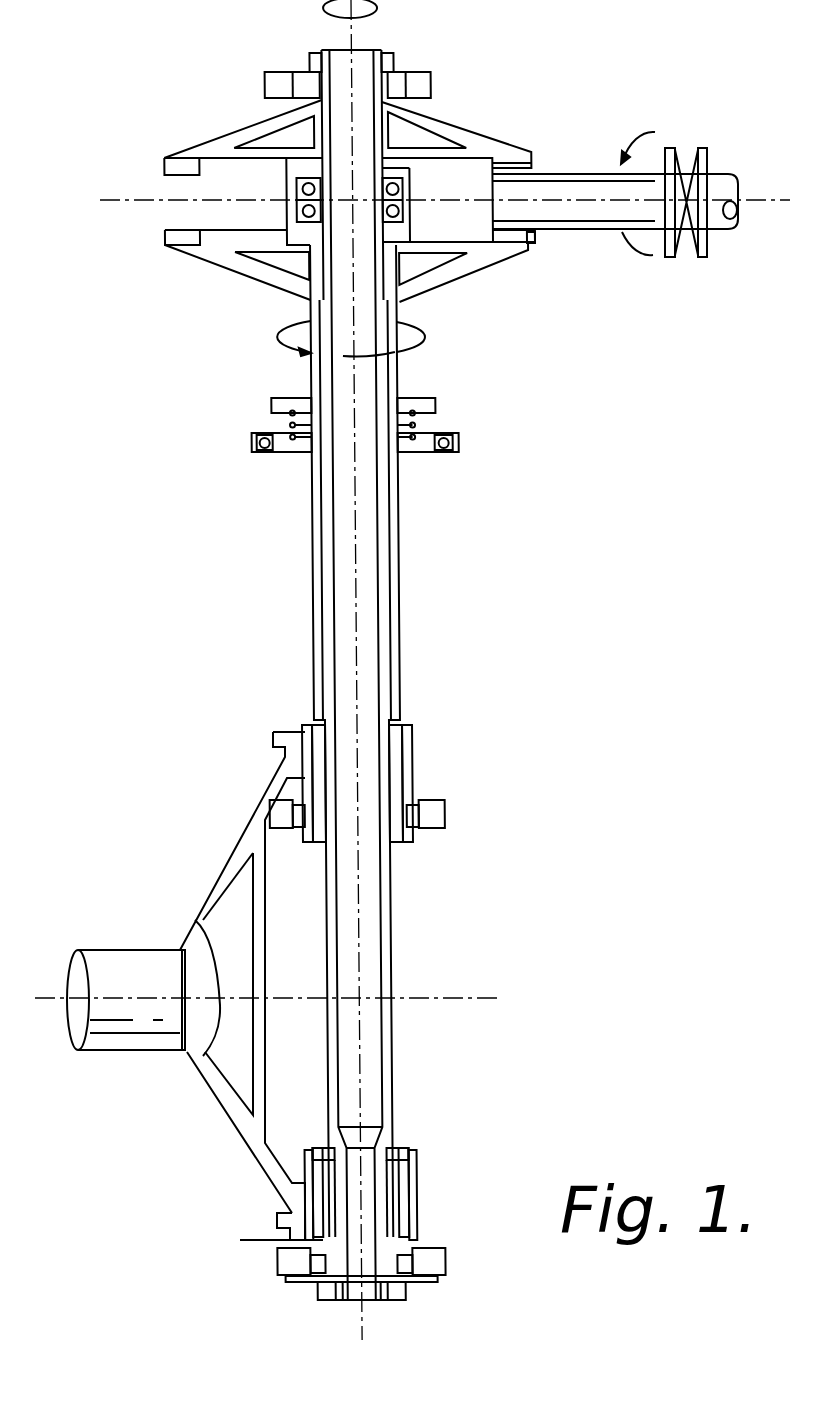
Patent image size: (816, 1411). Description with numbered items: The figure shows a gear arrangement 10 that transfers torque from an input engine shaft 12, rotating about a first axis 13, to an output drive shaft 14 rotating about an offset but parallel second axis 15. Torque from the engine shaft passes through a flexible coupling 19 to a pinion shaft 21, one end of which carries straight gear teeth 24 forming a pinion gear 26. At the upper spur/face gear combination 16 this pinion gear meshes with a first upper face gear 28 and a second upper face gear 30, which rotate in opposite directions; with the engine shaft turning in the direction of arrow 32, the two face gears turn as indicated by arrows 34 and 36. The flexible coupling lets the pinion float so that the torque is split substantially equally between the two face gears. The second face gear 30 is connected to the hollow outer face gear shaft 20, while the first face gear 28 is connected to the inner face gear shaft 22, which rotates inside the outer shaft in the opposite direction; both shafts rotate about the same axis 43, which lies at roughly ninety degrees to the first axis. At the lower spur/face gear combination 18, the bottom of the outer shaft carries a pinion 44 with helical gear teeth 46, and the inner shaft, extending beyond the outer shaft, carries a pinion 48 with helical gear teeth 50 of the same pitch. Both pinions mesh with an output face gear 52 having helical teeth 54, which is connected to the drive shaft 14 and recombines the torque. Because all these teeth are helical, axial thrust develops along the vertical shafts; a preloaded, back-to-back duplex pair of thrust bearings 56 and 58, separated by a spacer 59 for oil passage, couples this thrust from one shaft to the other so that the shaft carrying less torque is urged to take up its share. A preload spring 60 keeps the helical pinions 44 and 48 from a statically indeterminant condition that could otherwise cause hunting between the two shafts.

The gear arrangement 10 is at (512, 72).
The input engine shaft 12 is at (717, 173).
The first axis 13 is at (752, 200).
The output drive shaft 14 is at (121, 958).
The second axis 15 is at (52, 997).
The upper spur/face gear combination 16 is at (470, 288).
The lower spur/face gear combination 18 is at (212, 768).
The flexible coupling 19 is at (686, 260).
The outer face gear shaft 20 is at (312, 572).
The pinion shaft 21 is at (550, 234).
The inner face gear shaft 22 is at (390, 990).
The straight gear teeth 24 is at (530, 168).
The pinion gear 26 is at (527, 246).
The first upper face gear 28 is at (200, 152).
The second upper face gear 30 is at (221, 258).
The arrow 32 is at (636, 140).
The arrow 34 is at (323, 10).
The arrow 36 is at (280, 334).
The axis 43 is at (352, 32).
The pinion 44 is at (432, 719).
The gear teeth 46 is at (407, 787).
The pinion 48 is at (434, 1152).
The helical gear teeth 50 is at (418, 1238).
The output face gear 52 is at (226, 866).
The helical teeth 54 is at (293, 1240).
The thrust bearing 56 is at (300, 187).
The thrust bearing 58 is at (298, 210).
The spacer 59 is at (410, 205).
The preload spring 60 is at (412, 423).